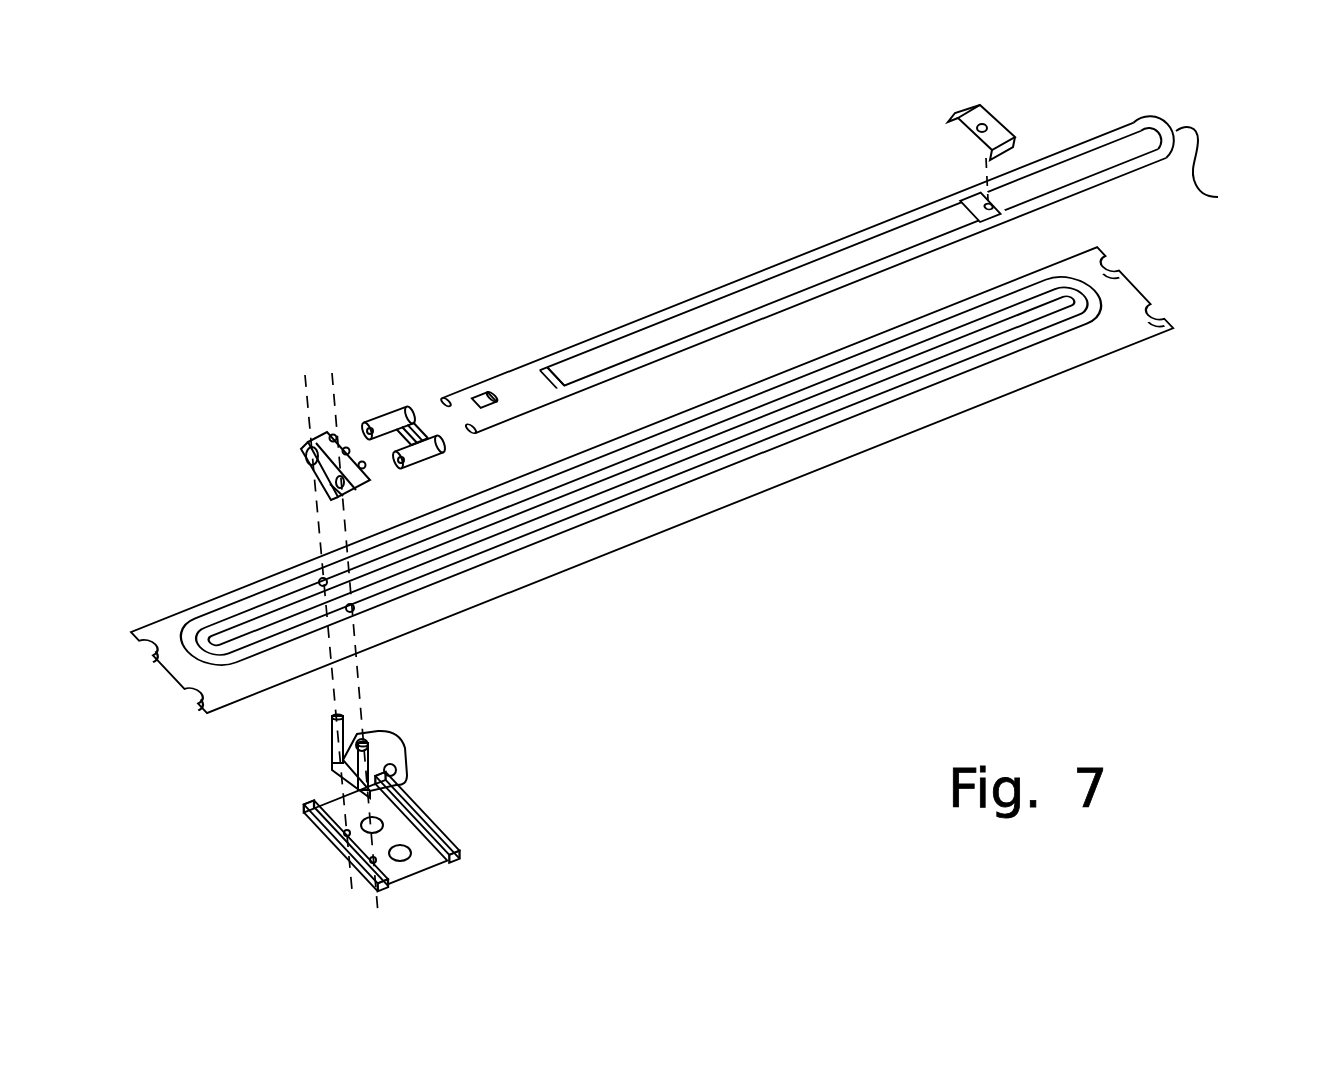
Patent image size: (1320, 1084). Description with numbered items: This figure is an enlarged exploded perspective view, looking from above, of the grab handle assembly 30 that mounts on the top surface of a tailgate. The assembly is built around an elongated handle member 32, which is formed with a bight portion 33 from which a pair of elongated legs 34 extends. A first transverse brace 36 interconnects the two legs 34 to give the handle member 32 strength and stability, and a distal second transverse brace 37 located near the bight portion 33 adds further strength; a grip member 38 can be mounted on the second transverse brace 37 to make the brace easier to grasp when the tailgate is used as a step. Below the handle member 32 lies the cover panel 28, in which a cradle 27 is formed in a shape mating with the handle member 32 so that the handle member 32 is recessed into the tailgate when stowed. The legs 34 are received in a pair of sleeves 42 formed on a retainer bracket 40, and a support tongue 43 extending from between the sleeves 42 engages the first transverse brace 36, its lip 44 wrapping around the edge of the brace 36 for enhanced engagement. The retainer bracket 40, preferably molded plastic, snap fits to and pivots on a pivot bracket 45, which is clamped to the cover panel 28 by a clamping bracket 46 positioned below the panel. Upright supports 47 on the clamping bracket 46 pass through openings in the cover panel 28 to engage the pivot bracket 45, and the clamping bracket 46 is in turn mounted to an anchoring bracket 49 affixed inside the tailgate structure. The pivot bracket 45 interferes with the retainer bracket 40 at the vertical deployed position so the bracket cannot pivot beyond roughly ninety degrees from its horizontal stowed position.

The cradle 27 is at (1085, 318).
The cover panel 28 is at (875, 430).
The grab handle assembly 30 is at (391, 310).
The handle member 32 is at (848, 240).
The bight portion 33 is at (1216, 171).
The legs 34 is at (712, 300).
The first transverse brace 36 is at (563, 363).
The second transverse brace 37 is at (968, 198).
The grip member 38 is at (992, 122).
The retainer bracket 40 is at (364, 418).
The sleeves 42 is at (405, 412).
The support tongue 43 is at (427, 398).
The lip 44 is at (497, 395).
The pivot bracket 45 is at (305, 455).
The clamping bracket 46 is at (401, 748).
The upright supports 47 is at (343, 757).
The anchoring bracket 49 is at (403, 833).